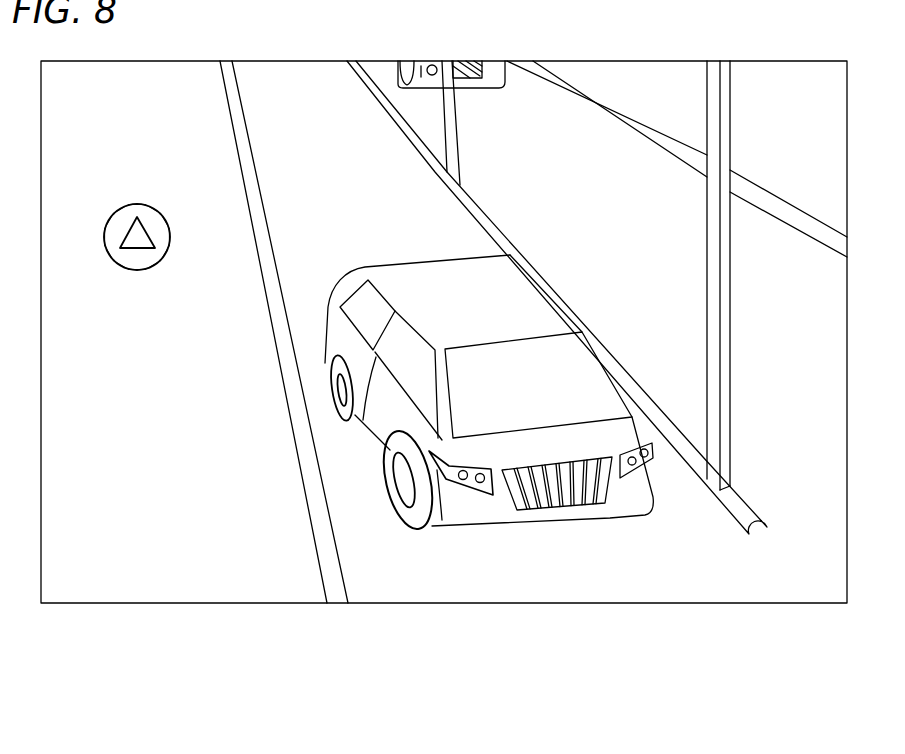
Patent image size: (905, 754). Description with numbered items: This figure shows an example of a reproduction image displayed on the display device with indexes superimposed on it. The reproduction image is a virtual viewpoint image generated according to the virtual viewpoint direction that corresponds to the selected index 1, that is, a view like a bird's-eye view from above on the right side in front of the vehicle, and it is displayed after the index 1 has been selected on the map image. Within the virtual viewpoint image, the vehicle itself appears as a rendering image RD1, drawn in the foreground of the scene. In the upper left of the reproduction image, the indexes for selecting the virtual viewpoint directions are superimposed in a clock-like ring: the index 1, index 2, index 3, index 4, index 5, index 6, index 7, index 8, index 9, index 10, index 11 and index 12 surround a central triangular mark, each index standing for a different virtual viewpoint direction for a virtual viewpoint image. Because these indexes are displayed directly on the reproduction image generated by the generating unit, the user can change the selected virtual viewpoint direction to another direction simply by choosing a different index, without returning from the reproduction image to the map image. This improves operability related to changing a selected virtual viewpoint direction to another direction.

The rendering image of the vehicle RD1 is at (500, 524).
The index 1 is at (154, 204).
The index 2 is at (168, 219).
The index 3 is at (176, 237).
The index 4 is at (168, 256).
The index 5 is at (154, 270).
The index 6 is at (137, 277).
The index 7 is at (120, 270).
The index 8 is at (105, 256).
The index 9 is at (98, 237).
The index 10 is at (103, 219).
The index 11 is at (118, 204).
The index 12 is at (137, 196).